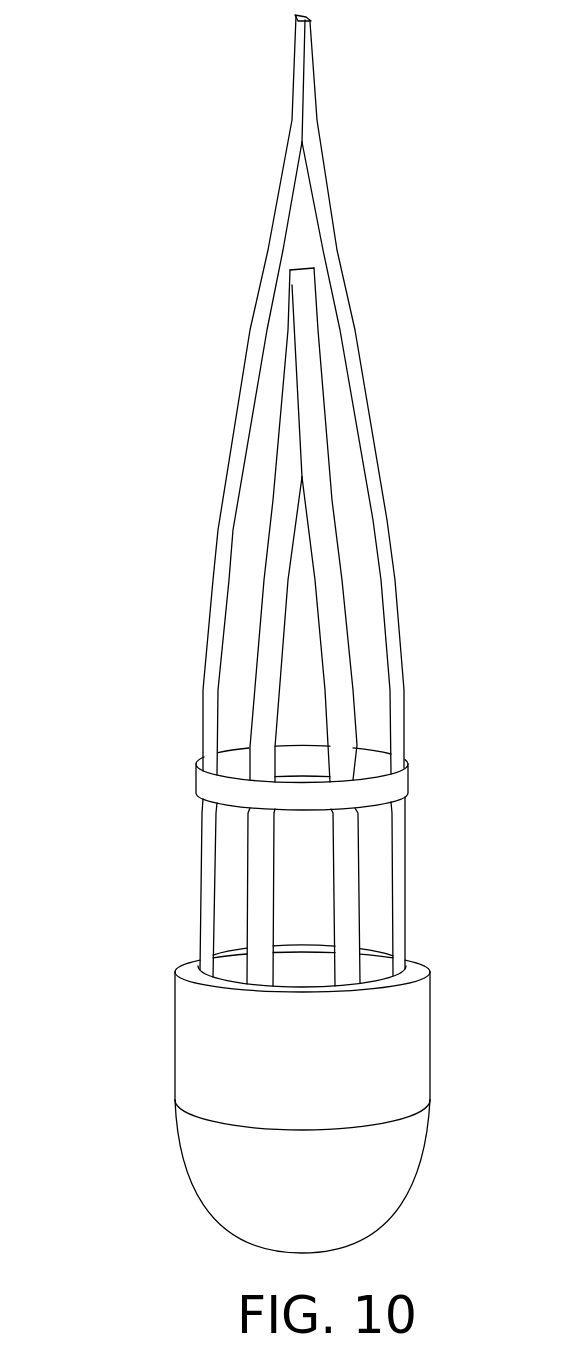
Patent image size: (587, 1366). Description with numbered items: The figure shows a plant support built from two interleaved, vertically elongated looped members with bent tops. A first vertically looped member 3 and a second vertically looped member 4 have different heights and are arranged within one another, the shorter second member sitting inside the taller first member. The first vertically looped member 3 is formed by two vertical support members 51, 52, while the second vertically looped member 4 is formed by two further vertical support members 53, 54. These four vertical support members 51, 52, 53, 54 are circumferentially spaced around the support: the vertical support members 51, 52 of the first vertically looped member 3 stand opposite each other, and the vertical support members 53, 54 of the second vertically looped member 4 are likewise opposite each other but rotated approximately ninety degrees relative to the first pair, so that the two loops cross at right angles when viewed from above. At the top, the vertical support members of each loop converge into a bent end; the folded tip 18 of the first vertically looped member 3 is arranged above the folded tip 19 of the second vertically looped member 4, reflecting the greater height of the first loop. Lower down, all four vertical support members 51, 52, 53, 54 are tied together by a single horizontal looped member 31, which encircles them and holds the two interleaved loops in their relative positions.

The first vertically looped member 3 is at (295, 500).
The second vertically looped member 4 is at (347, 923).
The folded tip 18 is at (296, 16).
The folded tip 19 is at (297, 268).
The horizontal looped member 31 is at (227, 790).
The vertical support member 51 is at (237, 440).
The vertical support member 52 is at (367, 413).
The vertical support member 53 is at (283, 508).
The vertical support member 54 is at (335, 502).